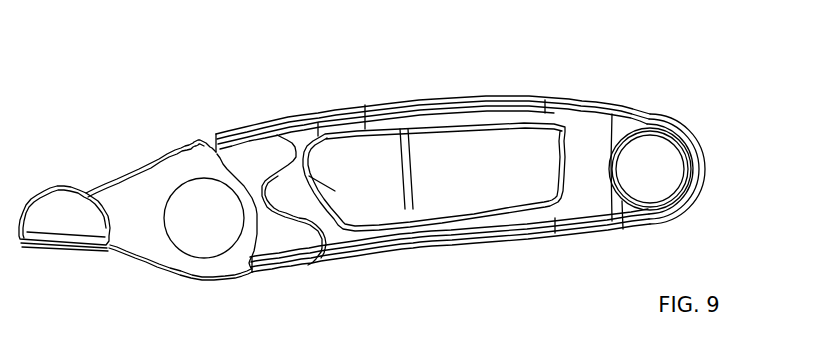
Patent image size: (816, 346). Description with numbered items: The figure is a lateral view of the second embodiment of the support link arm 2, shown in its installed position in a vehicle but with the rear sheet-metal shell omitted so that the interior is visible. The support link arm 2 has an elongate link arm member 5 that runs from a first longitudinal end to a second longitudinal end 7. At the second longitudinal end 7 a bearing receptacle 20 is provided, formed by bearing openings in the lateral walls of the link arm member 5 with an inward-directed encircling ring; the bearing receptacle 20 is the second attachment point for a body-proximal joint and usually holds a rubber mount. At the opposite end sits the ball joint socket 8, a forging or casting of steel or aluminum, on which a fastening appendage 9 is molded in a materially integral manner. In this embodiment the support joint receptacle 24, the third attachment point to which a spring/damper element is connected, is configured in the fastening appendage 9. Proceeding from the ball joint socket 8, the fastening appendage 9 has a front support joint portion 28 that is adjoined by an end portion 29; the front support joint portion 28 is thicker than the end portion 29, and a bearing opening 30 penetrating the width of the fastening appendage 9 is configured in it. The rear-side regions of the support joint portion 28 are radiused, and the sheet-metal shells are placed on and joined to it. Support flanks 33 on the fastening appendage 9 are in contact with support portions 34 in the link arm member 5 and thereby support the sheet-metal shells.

The support link arm 2 is at (168, 108).
The link arm member 5 is at (467, 92).
The second longitudinal end 7 is at (650, 95).
The ball joint socket 8 is at (38, 192).
The fastening appendage 9 is at (147, 162).
The bearing receptacle 20 is at (683, 148).
The support joint receptacle 24 is at (208, 258).
The front support joint portion 28 is at (130, 243).
The end portion 29 is at (247, 148).
The bearing opening 30 is at (187, 192).
The support flanks 33 is at (270, 128).
The support portions 34 is at (298, 257).